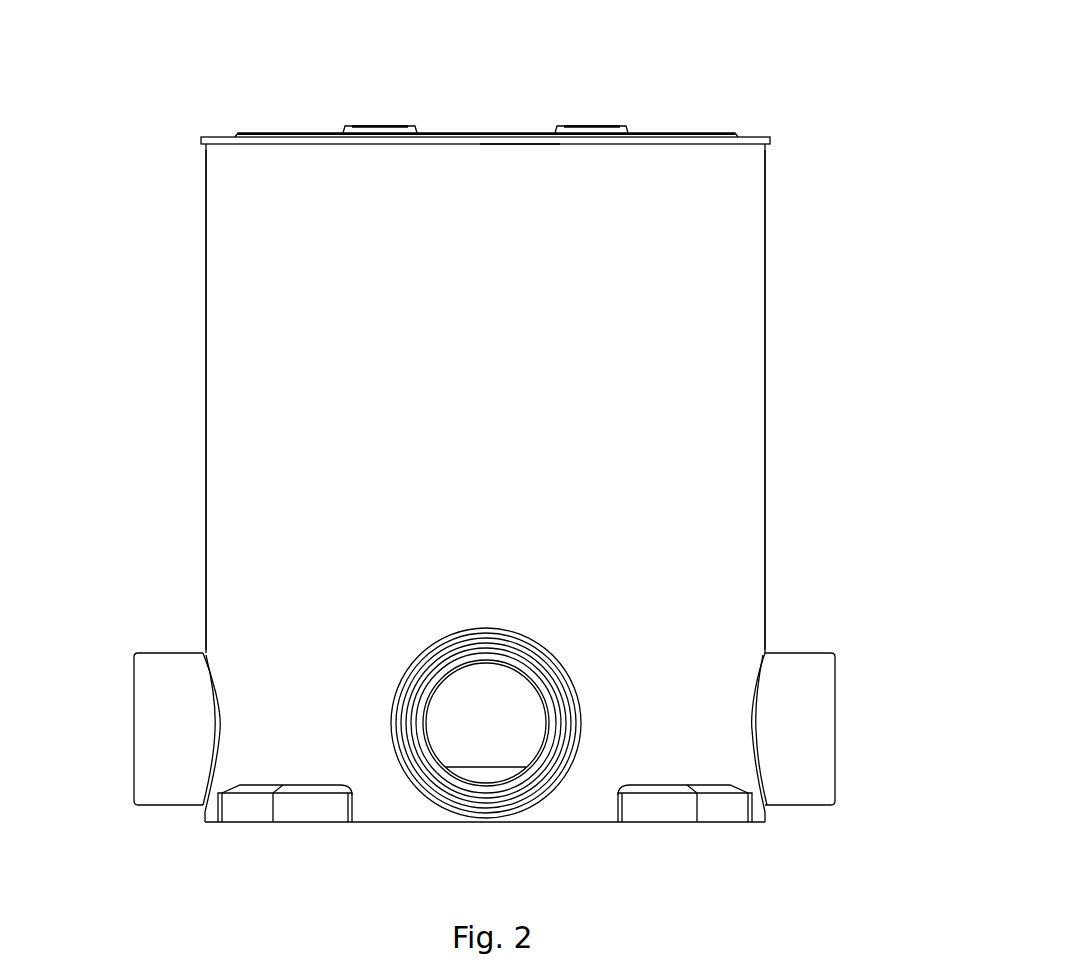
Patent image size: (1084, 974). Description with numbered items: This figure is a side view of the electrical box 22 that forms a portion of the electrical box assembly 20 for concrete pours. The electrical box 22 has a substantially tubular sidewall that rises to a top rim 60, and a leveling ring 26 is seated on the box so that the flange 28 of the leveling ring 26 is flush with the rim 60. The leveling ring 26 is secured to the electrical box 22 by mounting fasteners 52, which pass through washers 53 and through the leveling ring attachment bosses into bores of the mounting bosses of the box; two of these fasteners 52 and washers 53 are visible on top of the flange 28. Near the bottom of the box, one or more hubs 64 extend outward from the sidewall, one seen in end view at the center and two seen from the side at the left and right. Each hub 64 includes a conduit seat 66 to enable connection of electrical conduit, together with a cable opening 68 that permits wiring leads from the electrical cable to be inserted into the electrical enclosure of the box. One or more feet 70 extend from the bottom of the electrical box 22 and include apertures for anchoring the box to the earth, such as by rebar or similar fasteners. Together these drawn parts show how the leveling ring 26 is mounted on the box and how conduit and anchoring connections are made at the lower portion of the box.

The electrical box assembly 20 is at (100, 318).
The electrical box 22 is at (765, 395).
The leveling ring 26 is at (650, 128).
The flange 28 is at (756, 128).
The mounting fasteners 52 is at (382, 125).
The washers 53 is at (415, 126).
The top rim 60 is at (523, 156).
The hubs 64 is at (420, 652).
The conduit seat 66 is at (540, 762).
The cable opening 68 is at (501, 695).
The feet 70 is at (723, 812).